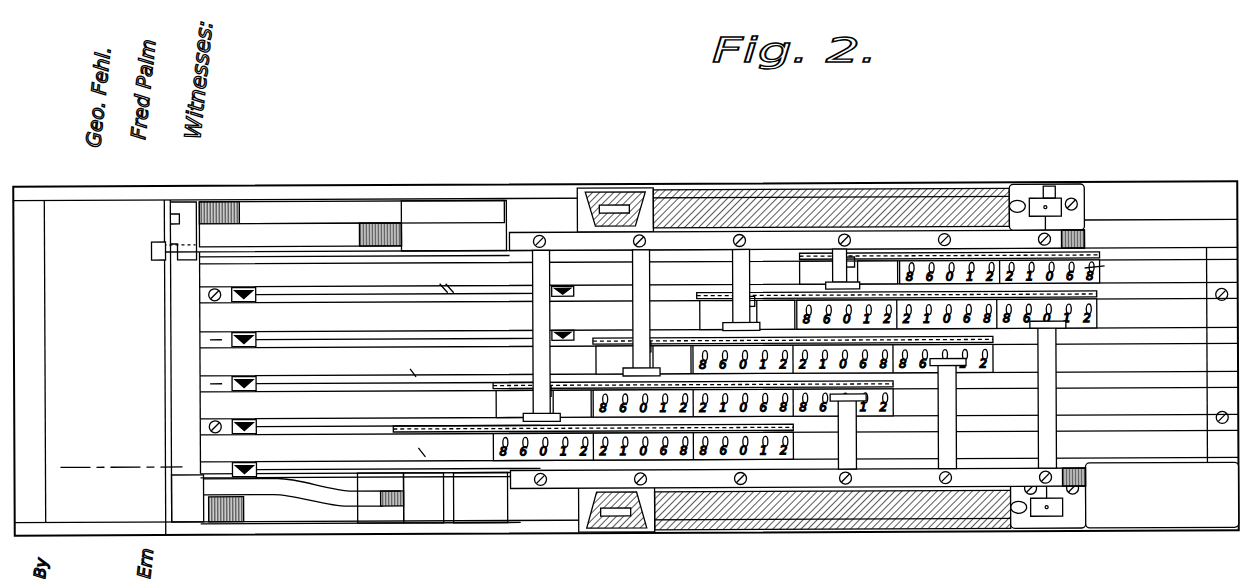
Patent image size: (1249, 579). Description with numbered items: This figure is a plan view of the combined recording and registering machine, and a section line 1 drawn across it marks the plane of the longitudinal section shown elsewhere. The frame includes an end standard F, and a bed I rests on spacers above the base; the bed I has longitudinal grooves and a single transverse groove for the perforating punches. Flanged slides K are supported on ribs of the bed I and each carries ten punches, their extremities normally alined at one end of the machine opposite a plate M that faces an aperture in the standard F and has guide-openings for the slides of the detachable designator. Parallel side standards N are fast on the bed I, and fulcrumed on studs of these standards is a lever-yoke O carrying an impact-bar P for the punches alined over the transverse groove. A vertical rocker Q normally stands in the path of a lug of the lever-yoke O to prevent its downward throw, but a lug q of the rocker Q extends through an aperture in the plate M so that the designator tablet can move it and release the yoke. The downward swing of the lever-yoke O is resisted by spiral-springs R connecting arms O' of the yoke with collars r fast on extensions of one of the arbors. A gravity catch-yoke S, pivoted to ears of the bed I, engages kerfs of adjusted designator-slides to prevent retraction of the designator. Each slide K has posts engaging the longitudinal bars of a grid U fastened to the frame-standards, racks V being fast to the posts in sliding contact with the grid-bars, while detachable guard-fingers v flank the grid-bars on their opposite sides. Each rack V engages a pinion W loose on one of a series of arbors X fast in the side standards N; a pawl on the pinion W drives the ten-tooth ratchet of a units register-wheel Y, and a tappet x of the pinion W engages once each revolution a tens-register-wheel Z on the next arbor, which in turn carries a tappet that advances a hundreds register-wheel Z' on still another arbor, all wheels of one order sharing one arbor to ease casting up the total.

The impact-bar P is at (177, 206).
The gravity catch-yoke S is at (262, 218).
The lever-yoke O is at (626, 358).
The vertical rocker Q is at (178, 235).
The lug of the rocker q is at (147, 246).
The rack V is at (199, 269).
The guard-finger v is at (248, 290).
The grid U is at (719, 362).
The flanged slide K is at (431, 360).
The plate M is at (160, 382).
The end standard F is at (173, 409).
The section line 1 is at (70, 471).
The arm of the lever-yoke O' is at (616, 358).
The spiral-spring R is at (790, 193).
The side standard N is at (797, 360).
The arbor X is at (852, 251).
The pinion W is at (967, 246).
The tappet x is at (730, 321).
The units register-wheel Y is at (486, 484).
The tens-register-wheel Z is at (857, 375).
The hundreds register-wheel Z' is at (747, 355).
The collar r is at (1050, 200).
The bed I is at (1161, 373).